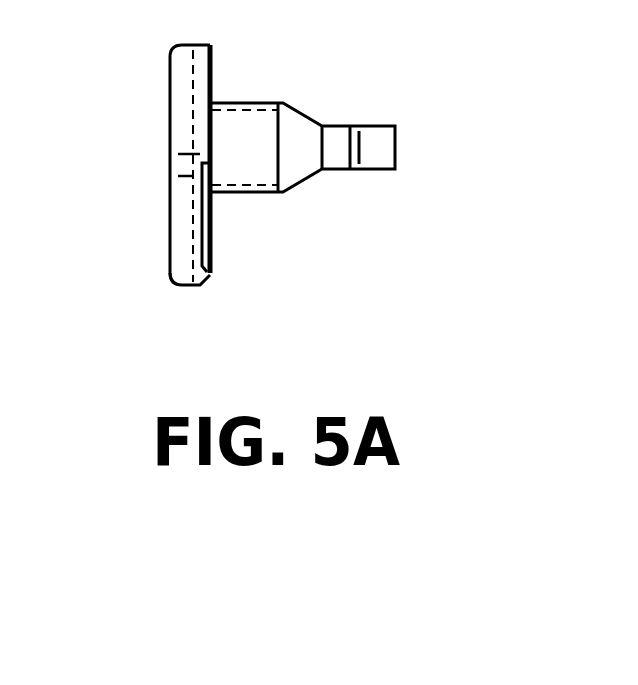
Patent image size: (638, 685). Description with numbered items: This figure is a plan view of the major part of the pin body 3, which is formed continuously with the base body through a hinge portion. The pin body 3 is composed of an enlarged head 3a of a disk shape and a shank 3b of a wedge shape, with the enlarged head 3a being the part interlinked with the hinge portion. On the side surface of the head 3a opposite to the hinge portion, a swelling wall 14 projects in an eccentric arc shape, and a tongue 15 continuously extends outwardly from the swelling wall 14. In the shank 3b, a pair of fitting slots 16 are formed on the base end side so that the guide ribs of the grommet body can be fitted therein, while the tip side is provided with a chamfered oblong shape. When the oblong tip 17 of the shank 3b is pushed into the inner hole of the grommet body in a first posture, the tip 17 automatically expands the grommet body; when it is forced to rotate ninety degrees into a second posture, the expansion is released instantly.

The pin body 3 is at (387, 97).
The enlarged head 3a is at (180, 103).
The shank 3b is at (247, 167).
The swelling wall 14 is at (207, 270).
The tongue 15 is at (180, 272).
The fitting slots 16 is at (252, 102).
The oblong tip 17 is at (383, 148).